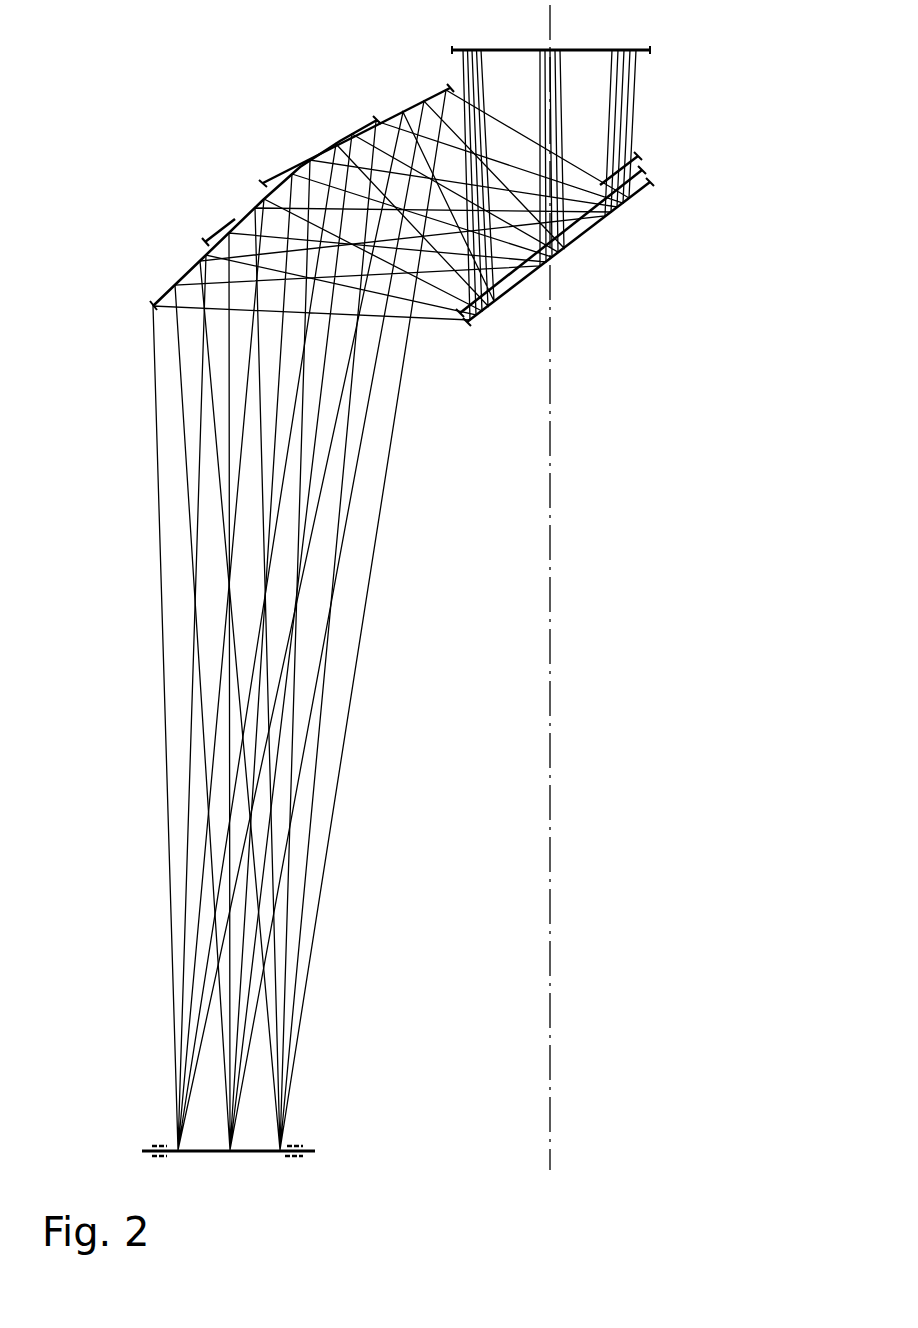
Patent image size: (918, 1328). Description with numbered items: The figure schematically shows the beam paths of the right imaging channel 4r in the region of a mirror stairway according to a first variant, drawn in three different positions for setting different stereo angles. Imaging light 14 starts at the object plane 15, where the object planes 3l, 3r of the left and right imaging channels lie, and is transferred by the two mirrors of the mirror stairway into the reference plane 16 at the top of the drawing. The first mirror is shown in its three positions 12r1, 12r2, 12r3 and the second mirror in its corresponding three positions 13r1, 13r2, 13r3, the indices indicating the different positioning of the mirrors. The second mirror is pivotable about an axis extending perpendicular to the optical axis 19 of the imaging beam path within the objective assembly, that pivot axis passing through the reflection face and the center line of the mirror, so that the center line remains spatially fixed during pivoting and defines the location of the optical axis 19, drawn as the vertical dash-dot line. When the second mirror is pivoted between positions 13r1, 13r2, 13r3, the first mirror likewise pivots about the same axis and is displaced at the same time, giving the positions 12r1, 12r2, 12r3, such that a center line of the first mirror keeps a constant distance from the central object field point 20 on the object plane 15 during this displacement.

The reference plane 16 is at (603, 48).
The optical axis 19 is at (551, 776).
The first mirror of the right mirror stairway in first position 12r1 is at (197, 265).
The first mirror of the right mirror stairway in second position 12r2 is at (228, 222).
The first mirror of the right mirror stairway in third position 12r3 is at (264, 184).
The second mirror of the right mirror stairway in first position 13r1 is at (585, 228).
The second mirror of the right mirror stairway in second position 13r2 is at (604, 217).
The second mirror of the right mirror stairway in third position 13r3 is at (640, 158).
The imaging light 14 is at (155, 739).
The right imaging channel 4r is at (663, 553).
The object plane 15 is at (158, 1151).
The object plane of the right imaging channel 3r is at (160, 1147).
The object plane of the left imaging channel 3l is at (160, 1156).
The central object field point 20 is at (233, 1150).